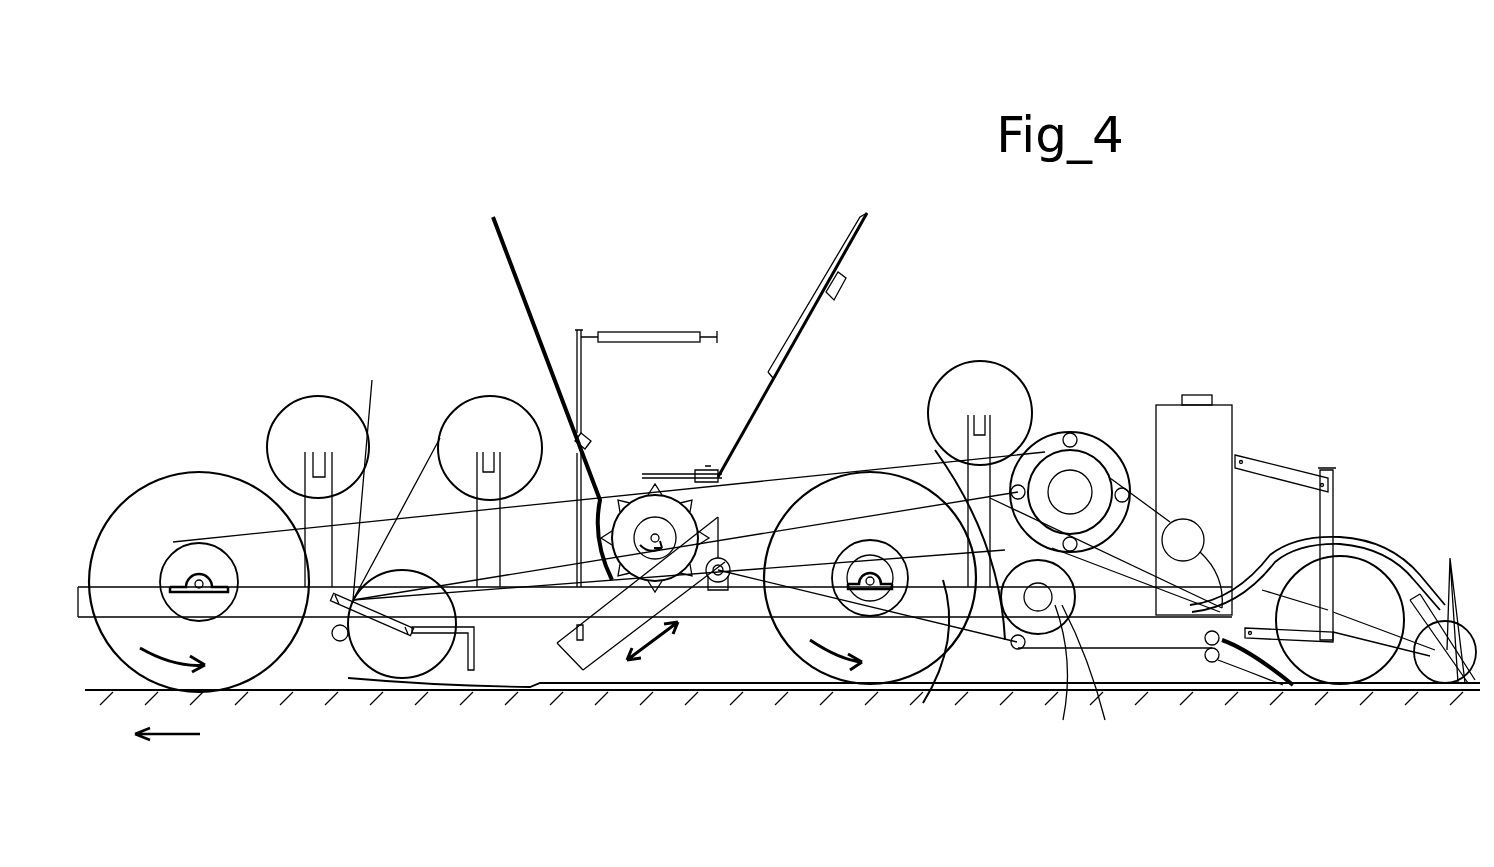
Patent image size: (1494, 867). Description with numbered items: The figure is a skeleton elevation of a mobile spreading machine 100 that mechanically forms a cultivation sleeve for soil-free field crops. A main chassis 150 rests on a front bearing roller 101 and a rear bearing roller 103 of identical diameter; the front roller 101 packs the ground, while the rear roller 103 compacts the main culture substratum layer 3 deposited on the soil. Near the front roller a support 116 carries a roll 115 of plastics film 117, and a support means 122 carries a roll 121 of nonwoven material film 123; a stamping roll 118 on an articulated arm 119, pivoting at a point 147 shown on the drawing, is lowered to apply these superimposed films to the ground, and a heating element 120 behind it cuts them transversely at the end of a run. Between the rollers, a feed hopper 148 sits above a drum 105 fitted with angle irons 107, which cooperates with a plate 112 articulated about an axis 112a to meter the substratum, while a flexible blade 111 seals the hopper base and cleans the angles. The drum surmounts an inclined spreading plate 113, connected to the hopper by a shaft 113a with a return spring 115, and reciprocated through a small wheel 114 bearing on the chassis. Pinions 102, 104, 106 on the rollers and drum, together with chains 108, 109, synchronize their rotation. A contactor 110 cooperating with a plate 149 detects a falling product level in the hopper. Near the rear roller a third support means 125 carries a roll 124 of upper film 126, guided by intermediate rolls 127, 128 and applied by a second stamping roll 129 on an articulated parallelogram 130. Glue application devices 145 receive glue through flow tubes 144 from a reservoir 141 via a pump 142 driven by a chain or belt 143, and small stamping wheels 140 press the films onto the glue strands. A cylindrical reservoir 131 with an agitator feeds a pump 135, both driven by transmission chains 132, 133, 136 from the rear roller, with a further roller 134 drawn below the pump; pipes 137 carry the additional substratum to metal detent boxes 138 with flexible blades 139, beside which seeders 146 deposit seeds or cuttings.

The main culture substratum layer 3 is at (718, 692).
The mobile spreading machine 100 is at (263, 377).
The front bearing roller 101 is at (226, 460).
The pinion 102 is at (178, 552).
The rear bearing roller 103 is at (806, 672).
The pinion 104 is at (858, 548).
The drum 105 is at (700, 505).
The pinion 106 is at (578, 551).
The angle irons 107 is at (645, 474).
The chain 108 is at (275, 538).
The chain 109 is at (795, 530).
The contactor 110 is at (838, 302).
The blade 111 is at (705, 470).
The plate 112 is at (598, 455).
The axis 112a is at (592, 430).
The inclined spreading plate 113 is at (600, 680).
The shaft 113a is at (578, 466).
The small wheel 114 is at (722, 590).
The roll of plastics film; return spring 115 is at (335, 395).
The support 116 is at (300, 480).
The plastics film 117 is at (375, 460).
The stamping roll 118 is at (385, 680).
The articulated arm 119 is at (330, 612).
The heating element 120 is at (478, 670).
The roll of nonwoven material film 121 is at (492, 412).
The support means 122 is at (462, 551).
The nonwoven material film 123 is at (418, 470).
The roll of film 124 is at (930, 405).
The third support means 125 is at (1020, 392).
The upper film 126 is at (1008, 640).
The intermediate roll 127 is at (1020, 650).
The intermediate roll 128 is at (1205, 645).
The second stamping roll 129 is at (1350, 555).
The articulated parallelogram 130 is at (1330, 468).
The reservoir 131 is at (1101, 678).
The transmission chain 132 is at (1050, 678).
The transmission chain 133 is at (922, 706).
The roller 134 is at (1060, 585).
The pump 135 is at (1080, 424).
The transmission chain 136 is at (925, 598).
The pipes 137 is at (1268, 560).
The metal detent boxes 138 is at (1420, 595).
The flexible blades 139 is at (1440, 685).
The small stamping wheels 140 is at (1377, 688).
The reservoir 141 is at (1232, 420).
The pump 142 is at (1186, 518).
The chain or belt 143 is at (1125, 455).
The flow tubes 144 is at (1195, 618).
The glue application device 145 is at (1283, 695).
The seeders 146 is at (1452, 555).
The pivot 147 is at (340, 642).
The feed hopper 148 is at (515, 240).
The plate 149 is at (795, 345).
The main chassis 150 is at (107, 598).